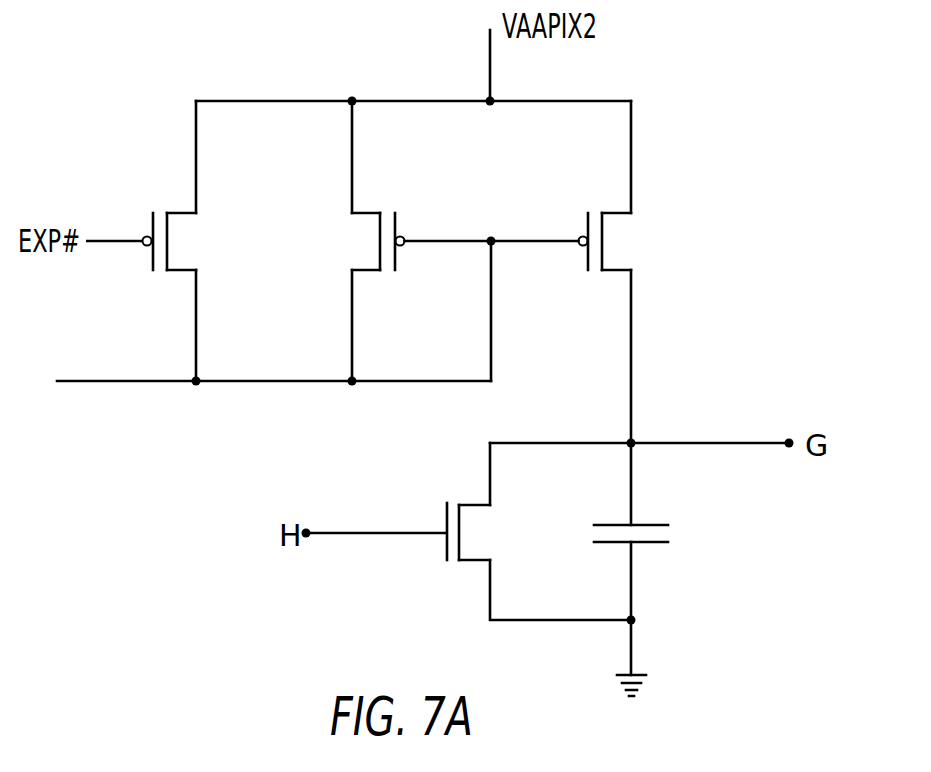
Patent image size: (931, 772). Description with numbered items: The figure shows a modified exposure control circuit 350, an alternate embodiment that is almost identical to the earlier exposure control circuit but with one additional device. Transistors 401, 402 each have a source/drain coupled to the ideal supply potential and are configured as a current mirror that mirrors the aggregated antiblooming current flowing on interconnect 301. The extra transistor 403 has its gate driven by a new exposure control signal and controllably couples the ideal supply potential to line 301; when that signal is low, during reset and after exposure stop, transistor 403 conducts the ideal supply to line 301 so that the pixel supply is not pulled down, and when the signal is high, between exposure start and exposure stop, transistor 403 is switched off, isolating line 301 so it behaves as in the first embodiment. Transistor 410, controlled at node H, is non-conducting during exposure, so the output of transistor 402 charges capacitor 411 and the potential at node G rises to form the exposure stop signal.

The interconnect 301 is at (105, 380).
The modified exposure control circuit 350 is at (697, 126).
The transistor 401 is at (378, 232).
The transistor 402 is at (603, 231).
The transistor 403 is at (170, 233).
The transistor 410 is at (462, 529).
The capacitor 411 is at (653, 522).